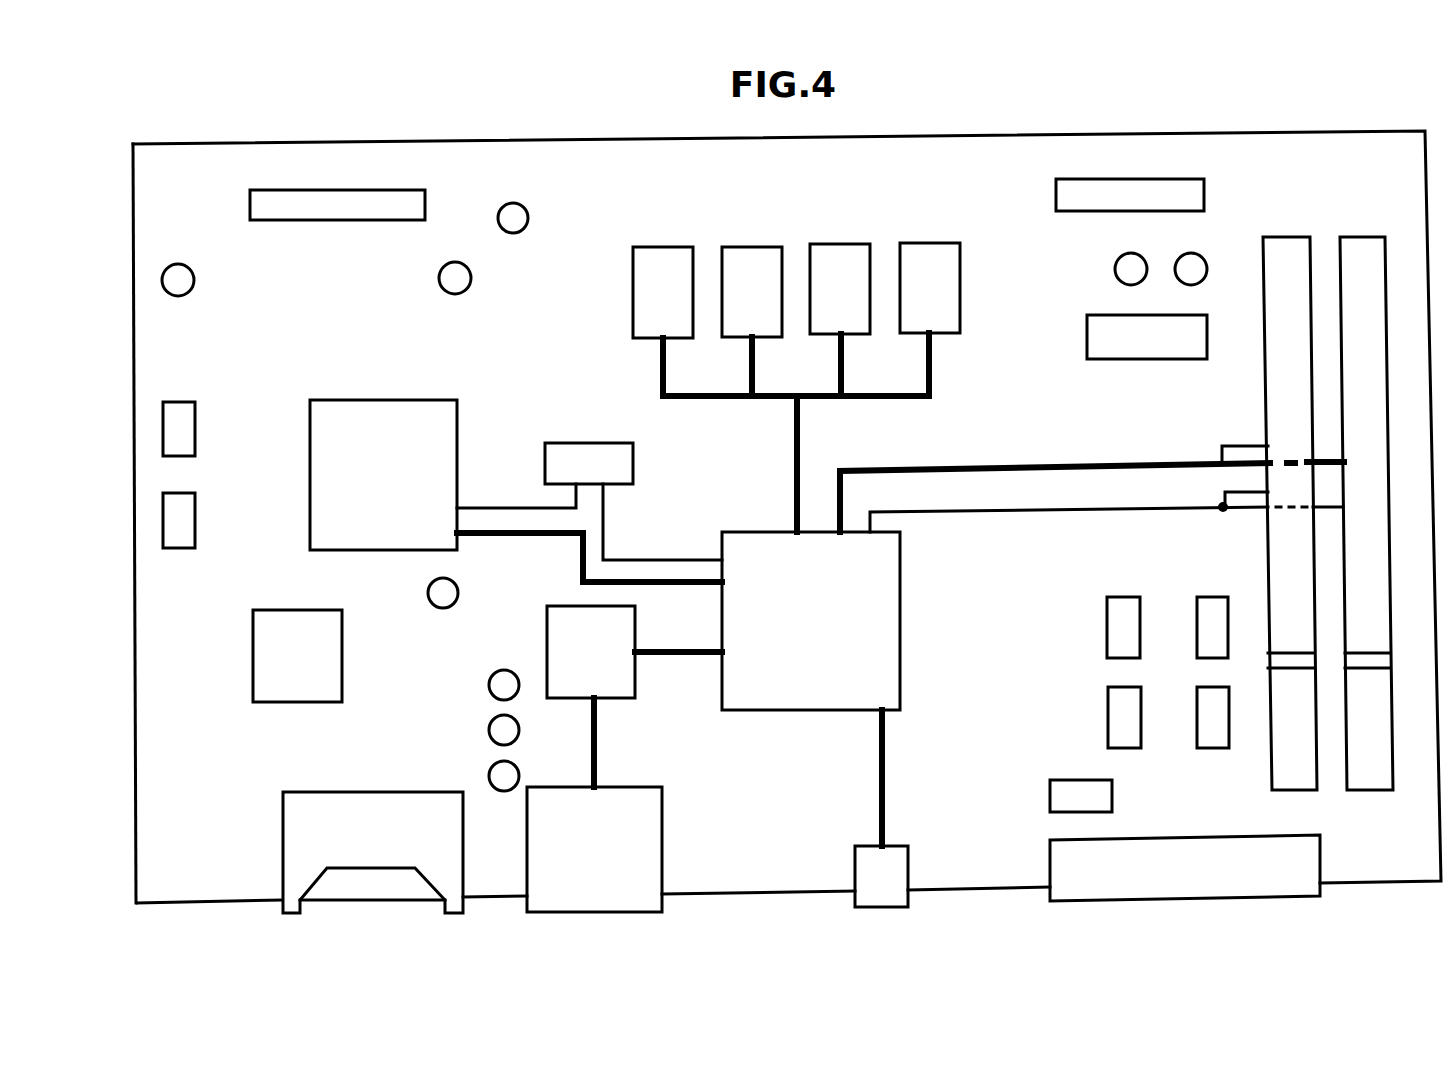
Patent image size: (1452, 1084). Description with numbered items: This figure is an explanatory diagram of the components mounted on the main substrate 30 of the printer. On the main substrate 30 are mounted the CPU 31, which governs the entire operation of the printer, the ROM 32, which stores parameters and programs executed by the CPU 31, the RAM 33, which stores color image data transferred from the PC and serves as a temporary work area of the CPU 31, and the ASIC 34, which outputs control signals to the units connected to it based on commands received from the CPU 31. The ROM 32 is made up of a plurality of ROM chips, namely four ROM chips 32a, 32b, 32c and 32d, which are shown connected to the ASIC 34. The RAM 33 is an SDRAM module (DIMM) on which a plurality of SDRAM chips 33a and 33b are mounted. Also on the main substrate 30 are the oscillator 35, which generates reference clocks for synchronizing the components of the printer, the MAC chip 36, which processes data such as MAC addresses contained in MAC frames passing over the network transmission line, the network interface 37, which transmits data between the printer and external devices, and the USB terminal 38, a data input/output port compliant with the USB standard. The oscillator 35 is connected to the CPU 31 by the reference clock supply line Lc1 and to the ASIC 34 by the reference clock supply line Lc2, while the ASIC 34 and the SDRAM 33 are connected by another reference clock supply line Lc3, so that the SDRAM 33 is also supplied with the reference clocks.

The main substrate 30 is at (1383, 131).
The CPU 31 is at (410, 398).
The ROM 32 is at (804, 343).
The ROM chip 32a is at (675, 246).
The ROM chip 32b is at (761, 246).
The ROM chip 32c is at (852, 243).
The ROM chip 32d is at (935, 298).
The RAM 33 is at (1335, 470).
The SDRAM chip 33a is at (1295, 235).
The SDRAM chip 33b is at (1372, 489).
The ASIC 34 is at (900, 573).
The oscillator 35 is at (572, 442).
The MAC chip 36 is at (547, 640).
The network interface 37 is at (662, 818).
The USB terminal 38 is at (855, 855).
The reference clock supply line Lc1 is at (503, 507).
The reference clock supply line Lc2 is at (668, 559).
The reference clock supply line Lc3 is at (1087, 510).